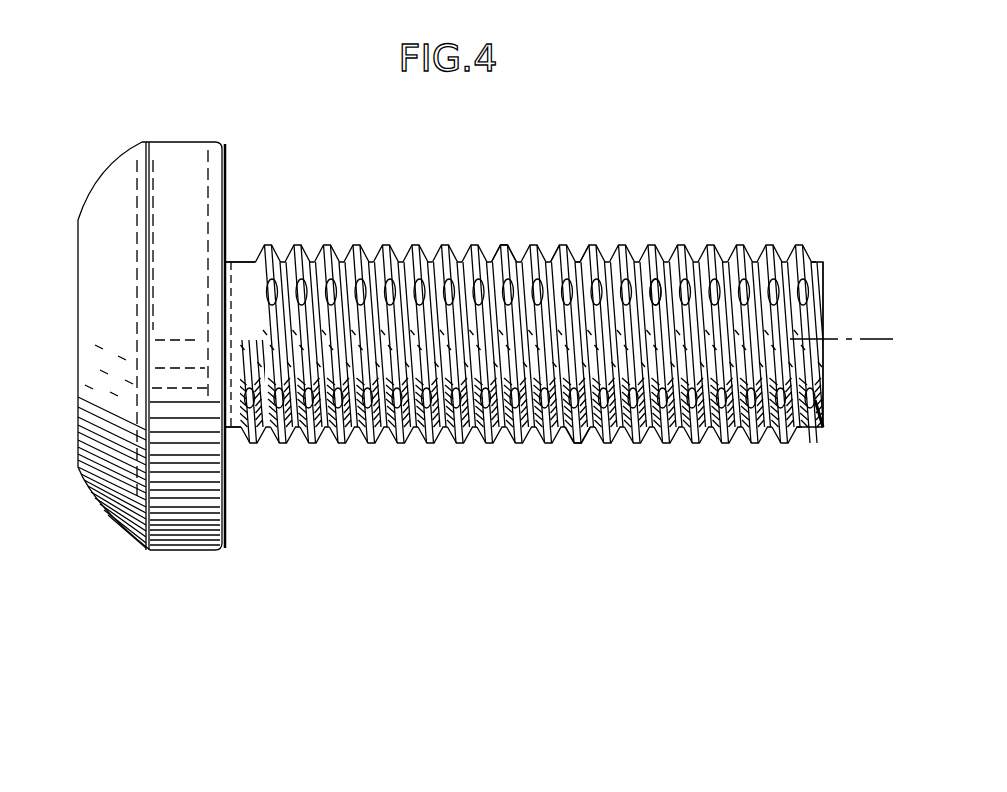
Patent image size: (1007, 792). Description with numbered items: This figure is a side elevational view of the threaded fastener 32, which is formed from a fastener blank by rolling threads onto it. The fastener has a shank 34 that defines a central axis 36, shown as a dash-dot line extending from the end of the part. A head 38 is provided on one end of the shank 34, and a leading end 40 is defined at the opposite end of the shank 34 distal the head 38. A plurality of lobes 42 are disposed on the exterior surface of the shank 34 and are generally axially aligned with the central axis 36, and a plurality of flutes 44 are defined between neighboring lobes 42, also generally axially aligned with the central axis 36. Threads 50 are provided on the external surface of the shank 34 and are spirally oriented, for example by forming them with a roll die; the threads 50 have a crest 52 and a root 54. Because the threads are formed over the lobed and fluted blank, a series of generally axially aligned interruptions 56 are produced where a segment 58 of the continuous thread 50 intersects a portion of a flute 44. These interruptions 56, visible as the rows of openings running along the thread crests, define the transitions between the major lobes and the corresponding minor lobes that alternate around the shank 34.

The threaded fastener 32 is at (414, 200).
The shank 34 is at (589, 465).
The central axis 36 is at (862, 338).
The head 38 is at (188, 560).
The leading end 40 is at (826, 399).
The lobes 42 is at (248, 333).
The flutes 44 is at (248, 290).
The threads 50 is at (495, 242).
The crest 52 is at (606, 259).
The root 54 is at (582, 265).
The interruptions 56 is at (659, 286).
The segment 58 is at (555, 262).